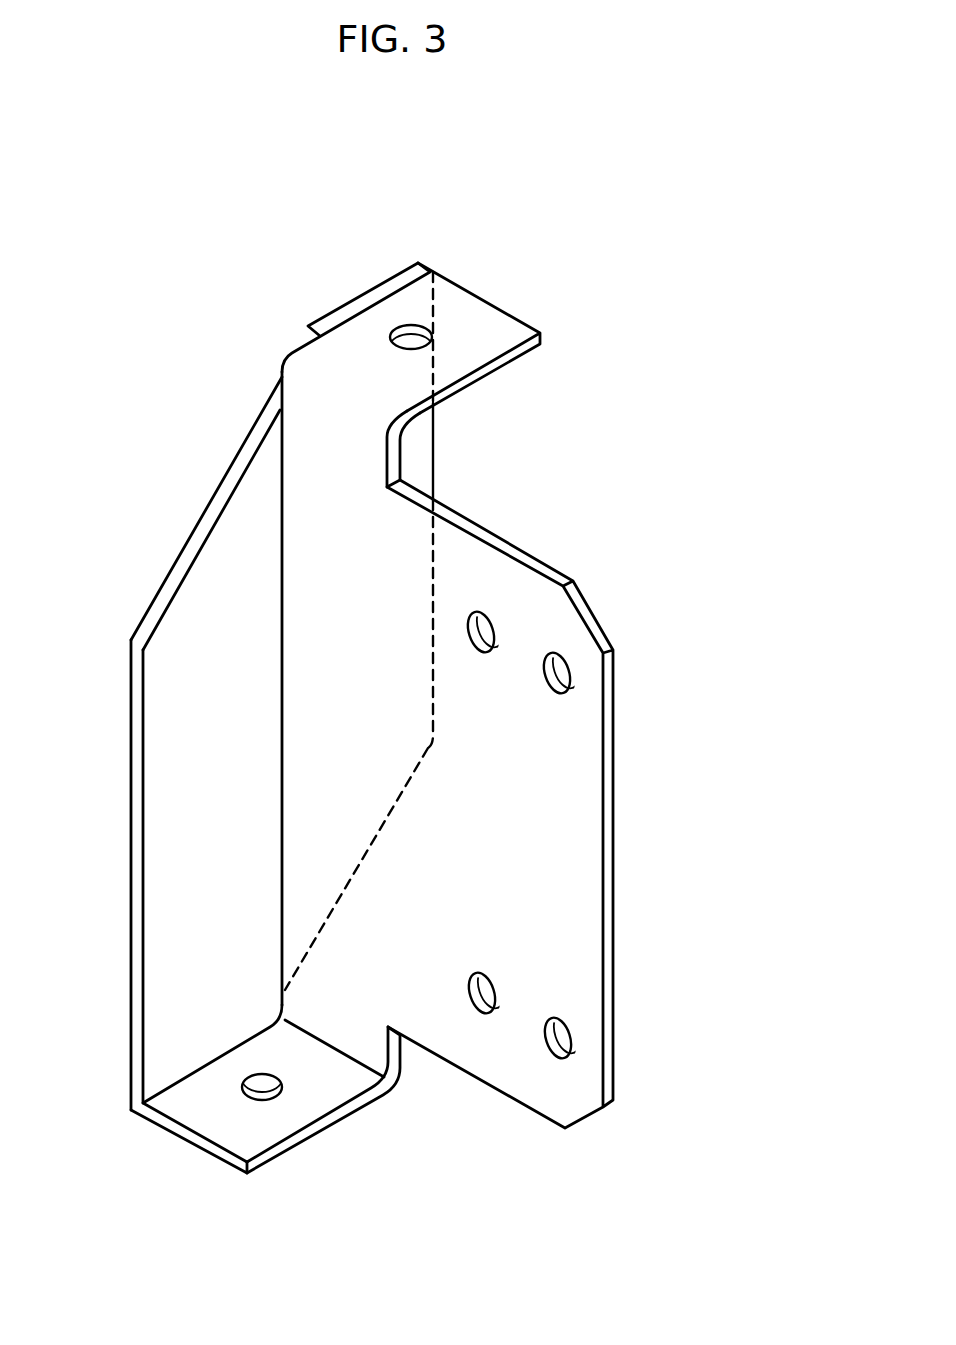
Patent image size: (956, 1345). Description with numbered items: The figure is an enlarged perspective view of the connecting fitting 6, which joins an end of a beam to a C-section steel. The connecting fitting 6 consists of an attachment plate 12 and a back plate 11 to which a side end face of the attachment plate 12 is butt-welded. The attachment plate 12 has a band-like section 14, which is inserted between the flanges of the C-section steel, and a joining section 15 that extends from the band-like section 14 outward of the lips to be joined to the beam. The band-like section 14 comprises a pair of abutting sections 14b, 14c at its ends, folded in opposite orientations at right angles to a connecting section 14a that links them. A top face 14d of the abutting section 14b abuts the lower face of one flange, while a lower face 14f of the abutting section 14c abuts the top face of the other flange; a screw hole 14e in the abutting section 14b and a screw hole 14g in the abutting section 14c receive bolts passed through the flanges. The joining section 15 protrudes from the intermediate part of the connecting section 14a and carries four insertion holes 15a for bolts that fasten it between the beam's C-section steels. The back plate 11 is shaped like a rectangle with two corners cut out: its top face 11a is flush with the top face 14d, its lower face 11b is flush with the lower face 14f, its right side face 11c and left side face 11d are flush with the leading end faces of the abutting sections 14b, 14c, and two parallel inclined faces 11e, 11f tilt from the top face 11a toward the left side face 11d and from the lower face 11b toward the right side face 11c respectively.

The connecting fitting 6 is at (610, 147).
The back plate 11 is at (427, 263).
The top face 11a is at (380, 297).
The lower face 11b is at (133, 1113).
The right side face 11c is at (433, 453).
The left side face 11d is at (138, 770).
The inclined face 11e is at (237, 460).
The inclined face 11f is at (362, 863).
The attachment plate 12 is at (642, 195).
The band-like section 14 is at (477, 310).
The connecting section 14a is at (305, 617).
The abutting section 14b is at (468, 384).
The abutting section 14c is at (298, 1113).
The top face 14d is at (355, 352).
The screw hole 14e is at (427, 330).
The lower face 14f is at (202, 1153).
The screw hole 14g is at (259, 1088).
The joining section 15 is at (535, 553).
The insertion holes 15a is at (483, 628).